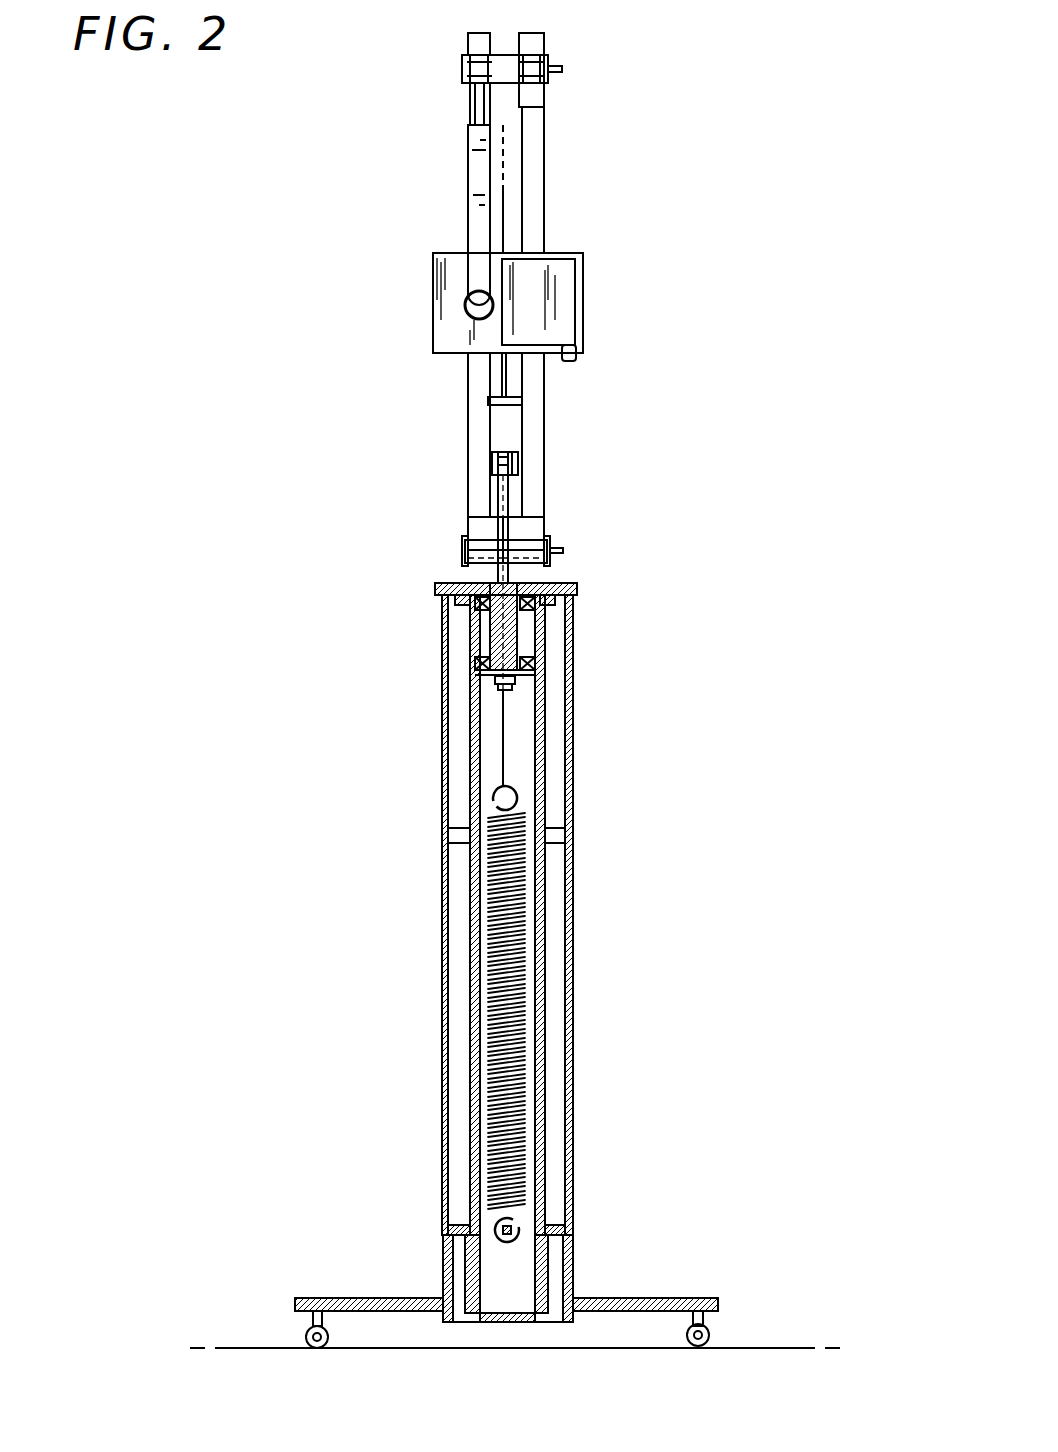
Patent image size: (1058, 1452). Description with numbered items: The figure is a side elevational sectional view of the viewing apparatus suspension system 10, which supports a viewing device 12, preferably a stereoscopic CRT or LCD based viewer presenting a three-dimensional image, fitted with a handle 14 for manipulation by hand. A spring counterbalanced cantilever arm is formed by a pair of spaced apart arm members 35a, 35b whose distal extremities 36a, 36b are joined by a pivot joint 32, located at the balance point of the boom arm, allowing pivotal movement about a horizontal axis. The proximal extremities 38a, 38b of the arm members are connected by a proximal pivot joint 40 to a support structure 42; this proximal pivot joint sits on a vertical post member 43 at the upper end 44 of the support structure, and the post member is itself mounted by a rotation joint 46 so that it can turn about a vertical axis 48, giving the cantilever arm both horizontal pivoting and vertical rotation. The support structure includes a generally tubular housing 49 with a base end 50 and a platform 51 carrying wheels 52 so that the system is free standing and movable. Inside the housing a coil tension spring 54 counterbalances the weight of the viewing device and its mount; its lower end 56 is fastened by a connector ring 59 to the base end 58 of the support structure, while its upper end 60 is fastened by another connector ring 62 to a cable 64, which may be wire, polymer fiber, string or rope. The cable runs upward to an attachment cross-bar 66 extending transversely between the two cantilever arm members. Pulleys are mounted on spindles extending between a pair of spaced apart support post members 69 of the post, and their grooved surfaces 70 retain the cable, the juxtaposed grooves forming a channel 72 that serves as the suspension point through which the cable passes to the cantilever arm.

The viewing apparatus suspension system 10 is at (250, 243).
The viewing device 12 is at (583, 264).
The handles 14 is at (572, 347).
The pivot joint 32 is at (548, 62).
The arm member 35a is at (468, 422).
The arm member 35b is at (545, 385).
The distal extremity 36a is at (470, 93).
The distal extremity 36b is at (545, 118).
The proximal extremity 38a is at (468, 530).
The proximal extremity 38b is at (544, 525).
The proximal pivot joint 40 is at (462, 556).
The support structure 42 is at (443, 712).
The vertical post member 43 is at (498, 487).
The upper end 44 is at (428, 586).
The rotation joint 46 is at (540, 616).
The vertical axis 48 is at (505, 190).
The tubular housing 49 is at (573, 990).
The base end 50 is at (428, 1232).
The platform 51 is at (648, 1297).
The wheels 52 is at (712, 1335).
The tension spring 54 is at (488, 962).
The lower end 56 is at (508, 1181).
The base end 58 is at (572, 1215).
The connector ring 59 is at (505, 1238).
The upper end 60 is at (501, 789).
The connector ring 62 is at (515, 790).
The cable 64 is at (505, 745).
The attachment cross-bar 66 is at (488, 375).
The support post members 69 is at (518, 474).
The grooved surfaces 70 is at (492, 458).
The channel 72 is at (518, 458).